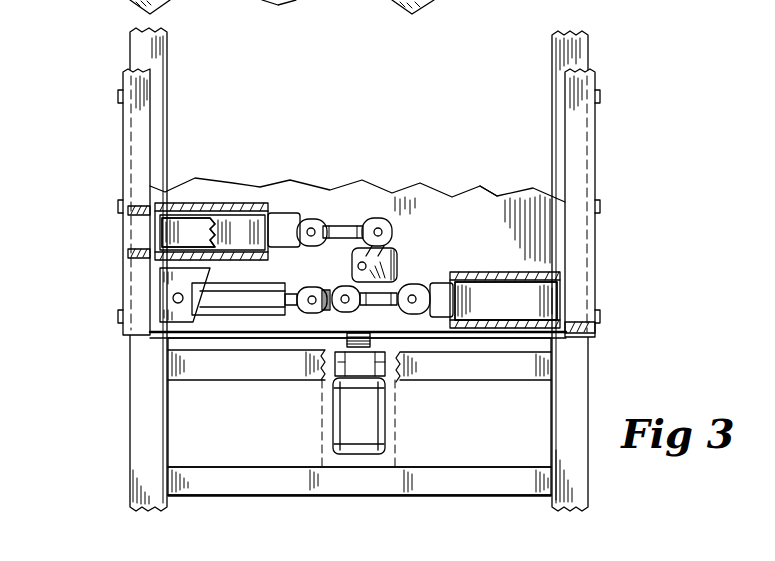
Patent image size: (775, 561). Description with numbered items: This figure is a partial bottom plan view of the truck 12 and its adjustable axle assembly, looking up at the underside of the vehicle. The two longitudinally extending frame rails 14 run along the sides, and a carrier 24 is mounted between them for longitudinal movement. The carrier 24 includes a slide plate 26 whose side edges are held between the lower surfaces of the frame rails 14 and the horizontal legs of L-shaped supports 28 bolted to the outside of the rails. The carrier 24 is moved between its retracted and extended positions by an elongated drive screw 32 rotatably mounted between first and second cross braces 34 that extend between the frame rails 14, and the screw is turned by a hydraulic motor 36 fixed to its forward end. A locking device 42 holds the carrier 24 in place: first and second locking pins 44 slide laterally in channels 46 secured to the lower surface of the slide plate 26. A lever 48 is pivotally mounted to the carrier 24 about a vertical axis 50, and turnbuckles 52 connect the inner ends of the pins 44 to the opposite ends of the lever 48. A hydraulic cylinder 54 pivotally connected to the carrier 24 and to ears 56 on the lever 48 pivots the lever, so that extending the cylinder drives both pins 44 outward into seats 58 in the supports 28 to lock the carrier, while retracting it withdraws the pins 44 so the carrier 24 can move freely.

The truck 12 is at (116, 69).
The frame rails 14 is at (137, 441).
The carrier 24 is at (456, 194).
The slide plate 26 is at (498, 200).
The L-shaped supports 28 is at (125, 153).
The drive screw 32 is at (372, 340).
The cross braces 34 is at (475, 473).
The hydraulic motor 36 is at (386, 432).
The locking device 42 is at (117, 280).
The locking pins 44 is at (160, 226).
The channels 46 is at (239, 210).
The lever 48 is at (388, 246).
The vertical axis 50 is at (355, 269).
The turnbuckles 52 is at (335, 226).
The hydraulic cylinder 54 is at (228, 326).
The ears 56 is at (305, 326).
The seats 58 is at (140, 206).